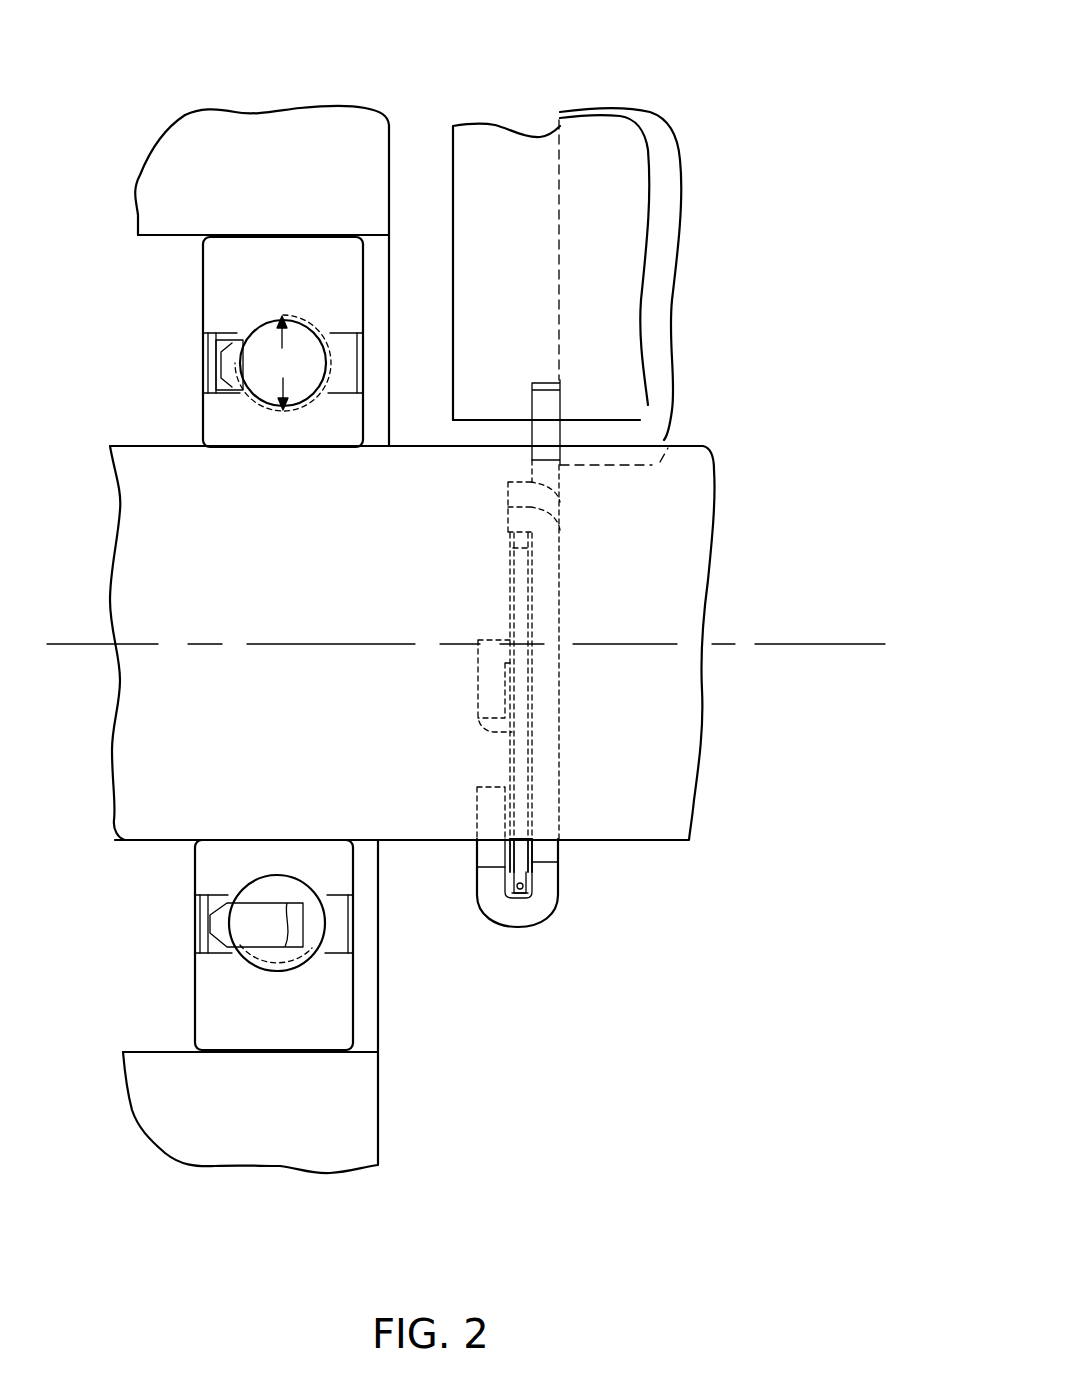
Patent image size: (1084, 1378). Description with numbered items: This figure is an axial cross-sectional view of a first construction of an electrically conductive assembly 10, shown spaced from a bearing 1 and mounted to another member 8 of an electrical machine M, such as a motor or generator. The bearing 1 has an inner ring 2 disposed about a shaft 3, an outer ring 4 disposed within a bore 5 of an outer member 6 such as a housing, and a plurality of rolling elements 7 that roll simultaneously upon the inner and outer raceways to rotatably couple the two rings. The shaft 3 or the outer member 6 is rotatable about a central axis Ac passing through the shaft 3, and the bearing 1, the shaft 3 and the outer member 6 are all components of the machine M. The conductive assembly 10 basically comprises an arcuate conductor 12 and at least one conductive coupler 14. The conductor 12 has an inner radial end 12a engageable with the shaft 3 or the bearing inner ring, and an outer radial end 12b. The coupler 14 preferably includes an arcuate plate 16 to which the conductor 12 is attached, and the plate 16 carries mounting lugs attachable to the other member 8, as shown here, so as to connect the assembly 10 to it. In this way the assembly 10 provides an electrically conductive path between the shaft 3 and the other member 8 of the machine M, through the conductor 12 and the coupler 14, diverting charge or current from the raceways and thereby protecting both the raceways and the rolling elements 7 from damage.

The bearing 1 is at (140, 303).
The inner ring 2 is at (212, 415).
The shaft 3 is at (137, 510).
The outer ring 4 is at (213, 270).
The bore 5 is at (160, 338).
The outer member 6 is at (153, 170).
The rolling elements 7 is at (313, 382).
The other member 8 is at (515, 158).
The electrically conductive assembly 10 is at (559, 707).
The arcuate conductor 12 is at (537, 870).
The inner radial end 12a is at (522, 840).
The outer radial end 12b is at (522, 894).
The conductive coupler 14 is at (555, 912).
The arcuate plate 16 is at (552, 548).
The electrical machine M is at (508, 80).
The central axis Ac is at (850, 643).